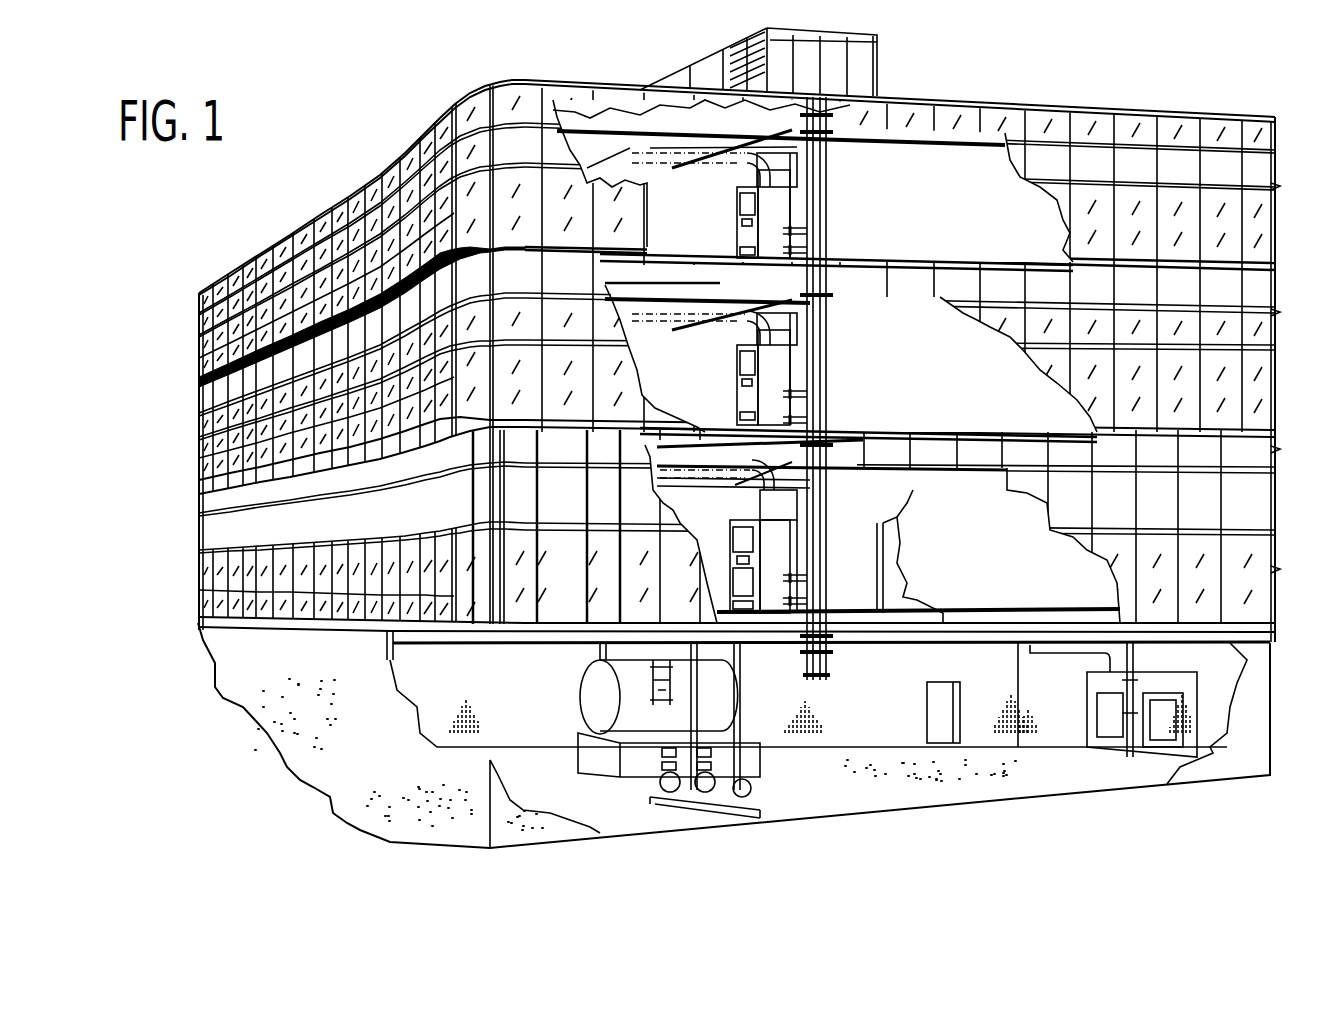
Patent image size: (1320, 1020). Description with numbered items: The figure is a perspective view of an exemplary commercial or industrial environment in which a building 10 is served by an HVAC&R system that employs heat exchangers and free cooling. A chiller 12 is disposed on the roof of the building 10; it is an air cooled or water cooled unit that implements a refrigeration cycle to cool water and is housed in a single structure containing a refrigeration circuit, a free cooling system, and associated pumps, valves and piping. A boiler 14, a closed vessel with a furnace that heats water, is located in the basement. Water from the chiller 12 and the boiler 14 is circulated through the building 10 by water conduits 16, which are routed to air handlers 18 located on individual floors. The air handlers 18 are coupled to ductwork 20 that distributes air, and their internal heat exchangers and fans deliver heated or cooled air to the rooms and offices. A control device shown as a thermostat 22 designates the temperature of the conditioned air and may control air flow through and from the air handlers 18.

The building 10 is at (1132, 108).
The chiller 12 is at (737, 52).
The boiler 14 is at (584, 697).
The water conduits 16 is at (827, 607).
The air handlers 18 is at (793, 192).
The ductwork 20 is at (703, 167).
The thermostat 22 is at (755, 212).